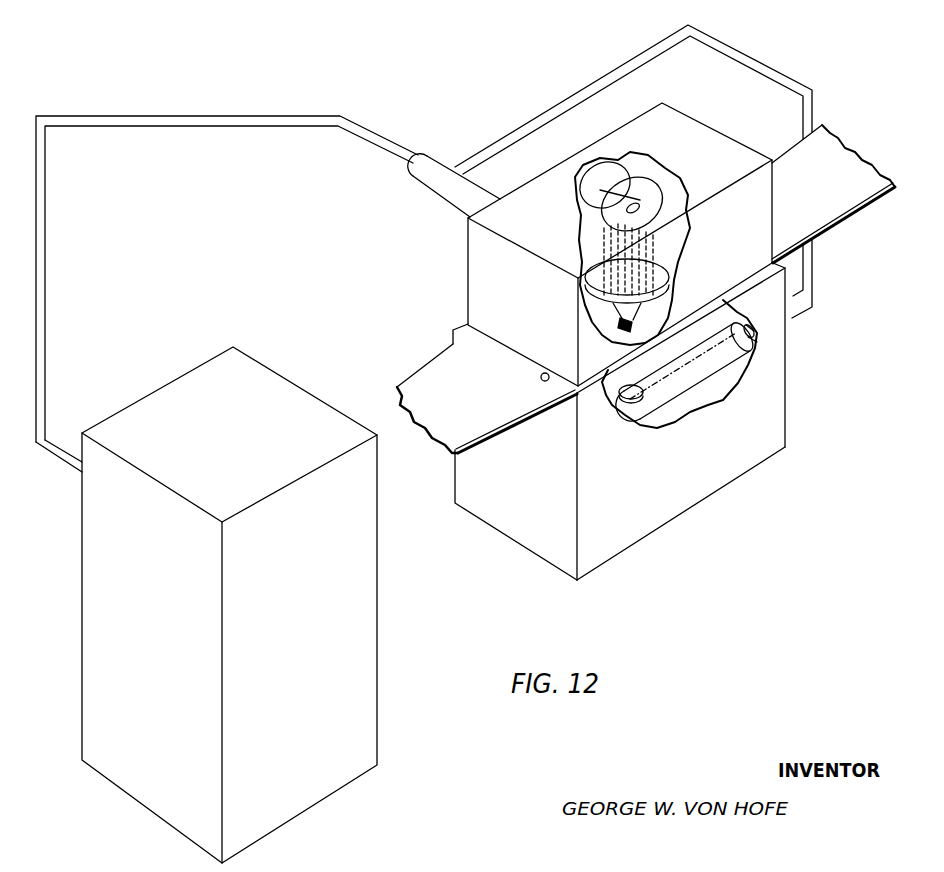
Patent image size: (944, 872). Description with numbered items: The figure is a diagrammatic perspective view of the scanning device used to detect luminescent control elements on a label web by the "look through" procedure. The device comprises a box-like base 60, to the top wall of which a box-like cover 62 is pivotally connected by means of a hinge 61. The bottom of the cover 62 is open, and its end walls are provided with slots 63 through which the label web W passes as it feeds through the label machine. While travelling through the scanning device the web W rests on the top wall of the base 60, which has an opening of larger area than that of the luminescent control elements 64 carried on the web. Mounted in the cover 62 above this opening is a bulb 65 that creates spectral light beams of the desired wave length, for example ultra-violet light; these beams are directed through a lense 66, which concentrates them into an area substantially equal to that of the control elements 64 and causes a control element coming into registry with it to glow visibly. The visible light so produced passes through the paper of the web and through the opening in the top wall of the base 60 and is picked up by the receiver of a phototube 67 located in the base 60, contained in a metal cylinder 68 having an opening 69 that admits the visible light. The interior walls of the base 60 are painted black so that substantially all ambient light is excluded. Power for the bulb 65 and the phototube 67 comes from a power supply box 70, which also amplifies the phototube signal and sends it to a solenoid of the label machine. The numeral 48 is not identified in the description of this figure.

The base 48 is at (753, 466).
The box-like base 60 is at (638, 489).
The hinge 61 is at (466, 325).
The box-like cover 62 is at (513, 281).
The slots 63 is at (547, 376).
The luminescent control elements 64 is at (820, 207).
The bulb 65 is at (650, 190).
The lense 66 is at (676, 273).
The phototube 67 is at (692, 371).
The metal cylinder 68 is at (750, 336).
The opening 69 is at (640, 386).
The power supply box 70 is at (378, 579).
The label web W is at (504, 427).